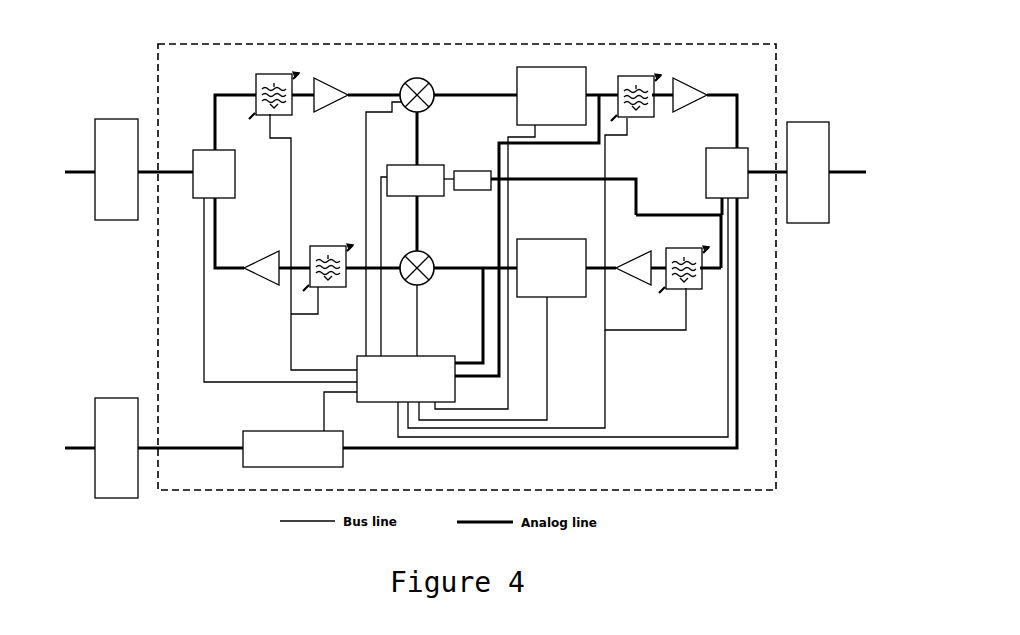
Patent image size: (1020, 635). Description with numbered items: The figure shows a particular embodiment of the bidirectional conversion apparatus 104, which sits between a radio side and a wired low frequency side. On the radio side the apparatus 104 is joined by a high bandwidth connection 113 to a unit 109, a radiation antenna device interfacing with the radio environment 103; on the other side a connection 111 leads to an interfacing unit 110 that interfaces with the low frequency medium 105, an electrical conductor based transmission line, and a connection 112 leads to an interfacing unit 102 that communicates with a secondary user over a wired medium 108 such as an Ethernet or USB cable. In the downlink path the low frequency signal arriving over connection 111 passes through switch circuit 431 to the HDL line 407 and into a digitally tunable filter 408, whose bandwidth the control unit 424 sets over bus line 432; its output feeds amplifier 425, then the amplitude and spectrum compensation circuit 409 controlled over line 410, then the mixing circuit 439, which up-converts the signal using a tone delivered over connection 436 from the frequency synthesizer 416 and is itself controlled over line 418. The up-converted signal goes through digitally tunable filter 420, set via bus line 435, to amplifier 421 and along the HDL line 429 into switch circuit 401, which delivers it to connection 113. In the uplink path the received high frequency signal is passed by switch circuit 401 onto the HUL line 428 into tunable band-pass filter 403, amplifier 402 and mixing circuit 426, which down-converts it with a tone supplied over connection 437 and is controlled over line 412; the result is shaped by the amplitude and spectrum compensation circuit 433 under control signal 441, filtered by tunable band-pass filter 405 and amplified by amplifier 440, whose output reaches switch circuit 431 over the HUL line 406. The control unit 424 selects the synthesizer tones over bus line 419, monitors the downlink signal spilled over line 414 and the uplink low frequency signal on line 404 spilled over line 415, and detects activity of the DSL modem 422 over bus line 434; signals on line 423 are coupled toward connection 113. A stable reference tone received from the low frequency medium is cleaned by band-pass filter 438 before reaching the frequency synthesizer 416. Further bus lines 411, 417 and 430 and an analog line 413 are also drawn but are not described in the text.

The interfacing unit 102 is at (116, 448).
The high bandwidth connection 103 is at (82, 180).
The bidirectional conversion apparatus 104 is at (158, 322).
The low frequency medium 105 is at (847, 187).
The wired medium 108 is at (84, 442).
The radiation antenna device 109 is at (116, 169).
The interfacing unit 110 is at (808, 172).
The connection 111 is at (767, 189).
The connection 112 is at (190, 464).
The high bandwidth connection 113 is at (165, 160).
The switch circuit 401 is at (235, 174).
The amplifier 402 is at (330, 105).
The tunable band-pass filter 403 is at (253, 82).
The line 404 is at (598, 93).
The tunable band-pass filter 405 is at (636, 106).
The HUL line 406 is at (737, 121).
The HDL line 407 is at (679, 233).
The digitally tunable filter 408 is at (690, 279).
The amplitude and spectrum compensation circuit 409 is at (541, 236).
The line 410 is at (502, 358).
The bus line 411 is at (563, 317).
The line 412 is at (359, 173).
The analog line 413 is at (563, 190).
The line 414 is at (464, 315).
The line 415 is at (527, 235).
The frequency synthesizer 416 is at (434, 162).
The bus line 417 is at (625, 234).
The line 418 is at (435, 320).
The bus line 419 is at (382, 196).
The digitally tunable filter 420 is at (351, 279).
The amplifier 421 is at (256, 282).
The DSL modem 422 is at (295, 460).
The line 423 is at (540, 336).
The control unit 424 is at (390, 353).
The amplifier 425 is at (633, 284).
The mixing circuit 426 is at (426, 80).
The HUL line 428 is at (235, 122).
The HDL line 429 is at (231, 233).
The bus line 430 is at (280, 290).
The switch circuit 431 is at (711, 173).
The bus line 432 is at (523, 379).
The amplitude and spectrum compensation circuit 433 is at (510, 96).
The bus line 434 is at (323, 411).
The bus line 435 is at (313, 242).
The connection 436 is at (435, 223).
The connection 437 is at (399, 138).
The band-pass filter 438 is at (474, 170).
The mixing circuit 439 is at (458, 264).
The amplifier 440 is at (692, 79).
The bus line 441 is at (491, 267).